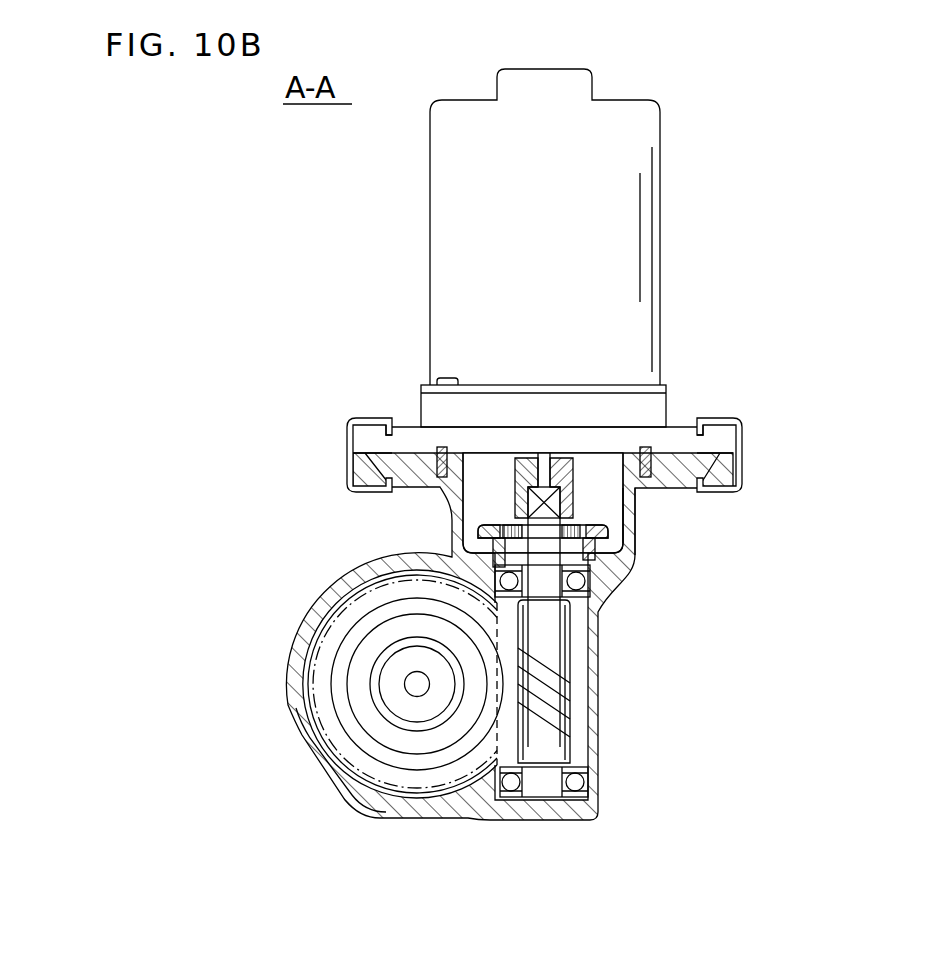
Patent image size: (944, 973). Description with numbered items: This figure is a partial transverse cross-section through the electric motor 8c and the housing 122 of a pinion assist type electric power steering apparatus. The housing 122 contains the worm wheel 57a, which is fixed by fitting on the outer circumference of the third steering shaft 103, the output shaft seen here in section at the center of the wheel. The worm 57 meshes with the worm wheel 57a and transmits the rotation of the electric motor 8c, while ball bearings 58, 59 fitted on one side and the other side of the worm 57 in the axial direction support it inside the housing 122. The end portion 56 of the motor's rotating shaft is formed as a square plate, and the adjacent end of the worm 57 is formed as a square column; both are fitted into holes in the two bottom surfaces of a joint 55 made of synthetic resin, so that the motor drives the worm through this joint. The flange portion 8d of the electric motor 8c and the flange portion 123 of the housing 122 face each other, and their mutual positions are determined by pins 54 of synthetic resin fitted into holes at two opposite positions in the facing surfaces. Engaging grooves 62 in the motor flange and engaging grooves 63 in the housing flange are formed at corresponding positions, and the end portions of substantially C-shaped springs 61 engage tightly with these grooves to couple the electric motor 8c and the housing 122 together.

The electric motor 8c is at (655, 129).
The flange portion of the electric motor 8d is at (490, 437).
The pin 54 is at (443, 503).
The joint 55 is at (643, 490).
The end portion of the rotating shaft 56 is at (548, 455).
The worm 57 is at (553, 553).
The worm wheel 57a is at (290, 655).
The ball bearing 58 is at (588, 580).
The ball bearing 59 is at (580, 782).
The C-shaped spring 61 is at (352, 424).
The engaging groove 62 is at (392, 432).
The engaging groove 63 is at (352, 449).
The third steering shaft 103 is at (388, 698).
The housing 122 is at (313, 596).
The flange portion of the housing 123 is at (362, 470).